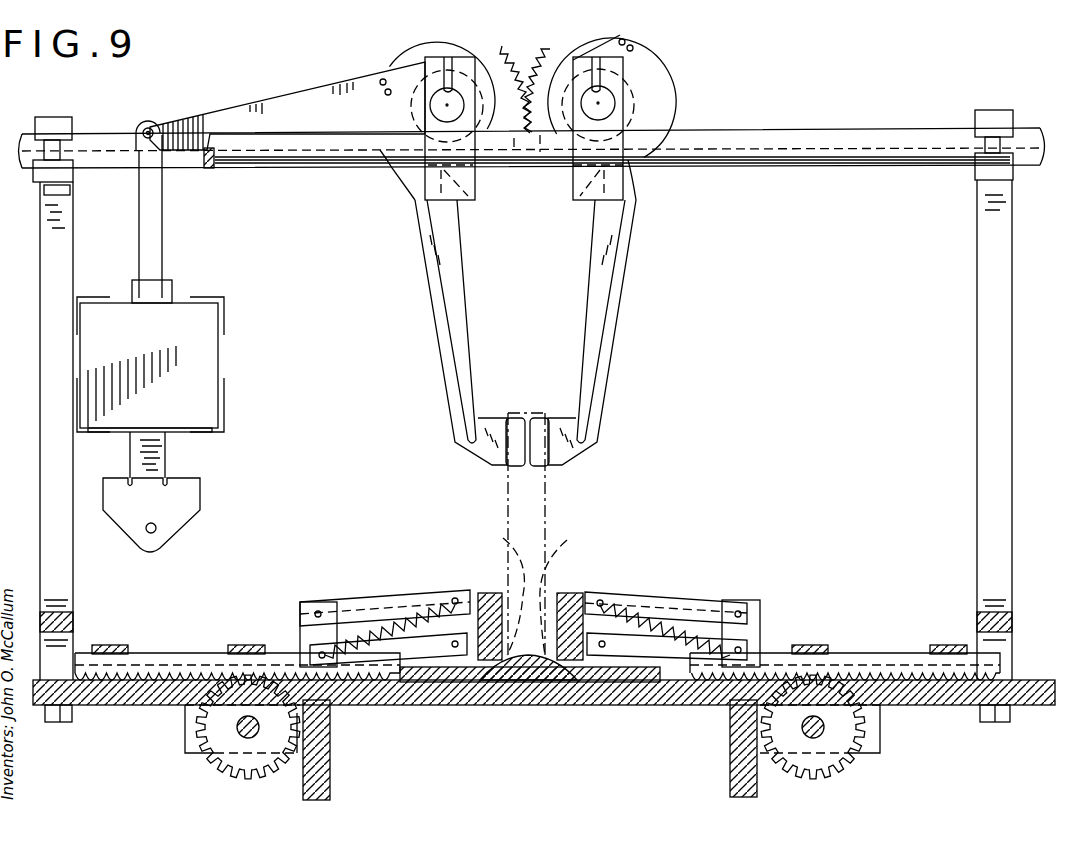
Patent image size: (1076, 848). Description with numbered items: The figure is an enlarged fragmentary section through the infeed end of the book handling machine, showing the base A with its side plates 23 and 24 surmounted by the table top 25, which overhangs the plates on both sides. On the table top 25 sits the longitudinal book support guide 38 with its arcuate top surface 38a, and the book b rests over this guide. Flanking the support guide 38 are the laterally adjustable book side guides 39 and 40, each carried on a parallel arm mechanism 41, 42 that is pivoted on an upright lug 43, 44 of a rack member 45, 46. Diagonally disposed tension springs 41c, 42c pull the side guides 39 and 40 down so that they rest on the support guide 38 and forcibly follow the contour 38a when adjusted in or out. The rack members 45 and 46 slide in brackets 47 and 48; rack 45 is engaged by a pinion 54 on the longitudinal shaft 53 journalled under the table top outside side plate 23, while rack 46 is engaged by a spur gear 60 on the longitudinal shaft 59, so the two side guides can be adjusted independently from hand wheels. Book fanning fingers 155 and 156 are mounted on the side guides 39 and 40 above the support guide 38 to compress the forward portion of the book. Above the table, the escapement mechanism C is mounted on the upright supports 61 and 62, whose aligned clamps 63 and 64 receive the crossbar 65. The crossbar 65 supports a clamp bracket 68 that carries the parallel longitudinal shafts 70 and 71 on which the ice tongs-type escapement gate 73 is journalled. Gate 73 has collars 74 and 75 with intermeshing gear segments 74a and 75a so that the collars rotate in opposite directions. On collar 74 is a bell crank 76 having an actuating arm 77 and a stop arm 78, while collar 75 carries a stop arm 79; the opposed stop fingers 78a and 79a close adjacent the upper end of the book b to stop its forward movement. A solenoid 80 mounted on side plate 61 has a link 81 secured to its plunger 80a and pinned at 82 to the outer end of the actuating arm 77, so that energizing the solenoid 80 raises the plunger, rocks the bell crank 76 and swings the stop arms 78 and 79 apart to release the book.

The side plate 23 is at (331, 758).
The side plate 24 is at (730, 757).
The table top 25 is at (666, 706).
The book support guide 38 is at (546, 682).
The arcuate top surface 38a is at (518, 682).
The book side guide 39 is at (490, 593).
The book side guide 40 is at (566, 593).
The parallel arm mechanism 41 is at (404, 600).
The tension spring 41c is at (372, 640).
The parallel arm mechanism 42 is at (700, 598).
The tension spring 42c is at (640, 625).
The upright lug 43 is at (300, 615).
The upright lug 44 is at (760, 610).
The rack member 45 is at (170, 653).
The rack member 46 is at (856, 653).
The bracket 47 is at (112, 645).
The bracket 48 is at (810, 645).
The longitudinal shaft 53 is at (240, 735).
The pinion 54 is at (275, 777).
The longitudinal shaft 59 is at (826, 730).
The spur gear 60 is at (838, 775).
The upright support 61 is at (60, 243).
The upright support 62 is at (985, 367).
The clamp 63 is at (58, 118).
The clamp 64 is at (995, 117).
The crossbar 65 is at (822, 130).
The clamp bracket 68 is at (430, 63).
The longitudinal shaft 70 is at (436, 107).
The longitudinal shaft 71 is at (606, 105).
The escapement gate 73 is at (648, 179).
The collar 74 is at (478, 170).
The gear segment 74a is at (502, 46).
The collar 75 is at (565, 170).
The gear segment 75a is at (548, 47).
The bell crank 76 is at (297, 88).
The actuating arm 77 is at (232, 113).
The stop arm 78 is at (447, 337).
The stop finger 78a is at (490, 418).
The stop arm 79 is at (603, 338).
The stop finger 79a is at (556, 418).
The solenoid 80 is at (180, 303).
The plunger 80a is at (166, 457).
The link 81 is at (150, 220).
The pin 82 is at (149, 126).
The book fanning finger 155 is at (502, 542).
The book fanning finger 156 is at (562, 556).
The base A is at (130, 712).
The escapement mechanism C is at (682, 84).
The book b is at (550, 512).